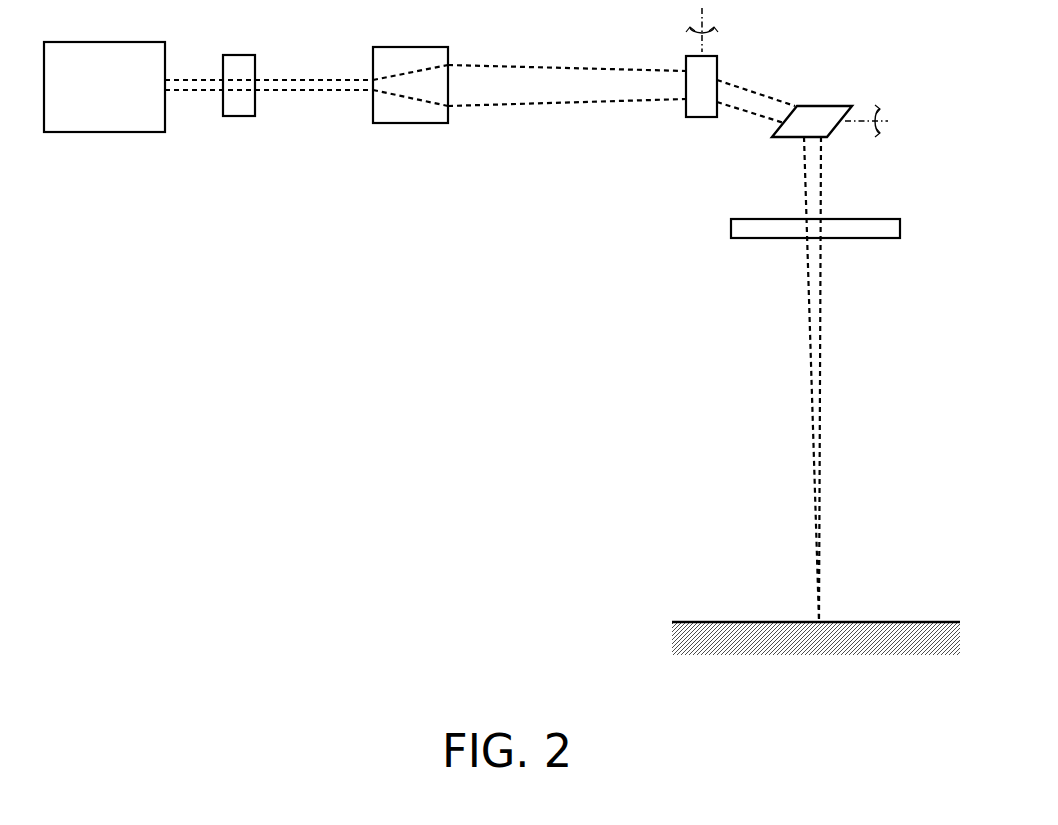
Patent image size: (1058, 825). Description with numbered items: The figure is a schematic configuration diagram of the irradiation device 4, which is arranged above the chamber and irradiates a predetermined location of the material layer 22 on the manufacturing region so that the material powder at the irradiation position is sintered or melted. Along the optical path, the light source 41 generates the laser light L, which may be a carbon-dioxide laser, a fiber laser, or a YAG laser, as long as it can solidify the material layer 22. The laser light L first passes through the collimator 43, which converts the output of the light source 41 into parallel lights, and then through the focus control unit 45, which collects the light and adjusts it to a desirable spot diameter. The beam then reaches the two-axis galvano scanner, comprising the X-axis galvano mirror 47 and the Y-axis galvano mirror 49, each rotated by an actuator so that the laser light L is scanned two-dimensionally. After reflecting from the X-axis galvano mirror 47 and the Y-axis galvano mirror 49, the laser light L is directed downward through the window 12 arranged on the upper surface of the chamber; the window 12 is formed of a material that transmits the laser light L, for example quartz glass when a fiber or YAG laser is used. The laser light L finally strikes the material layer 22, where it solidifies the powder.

The irradiation device 4 is at (398, 288).
The light source 41 is at (75, 124).
The collimator 43 is at (247, 112).
The focus control unit 45 is at (383, 117).
The X-axis galvano mirror 47 is at (700, 112).
The Y-axis galvano mirror 49 is at (833, 112).
The window 12 is at (746, 230).
The material layer 22 is at (721, 630).
The laser light L is at (820, 400).